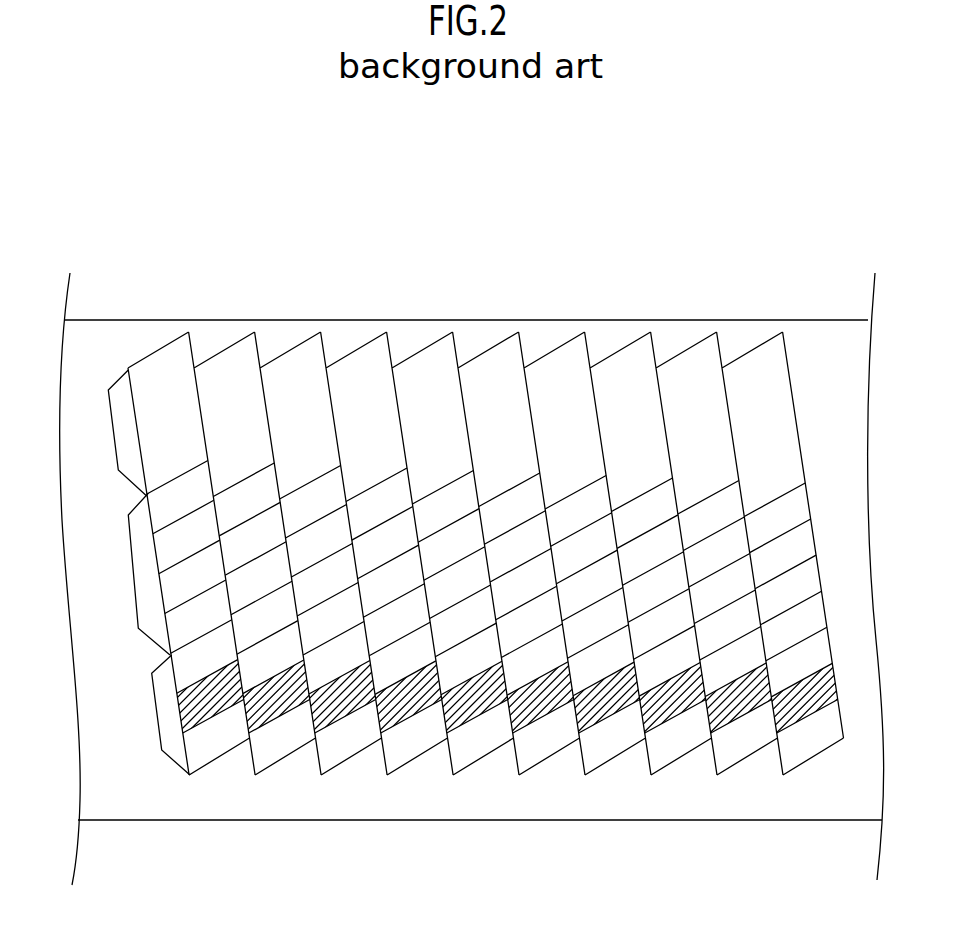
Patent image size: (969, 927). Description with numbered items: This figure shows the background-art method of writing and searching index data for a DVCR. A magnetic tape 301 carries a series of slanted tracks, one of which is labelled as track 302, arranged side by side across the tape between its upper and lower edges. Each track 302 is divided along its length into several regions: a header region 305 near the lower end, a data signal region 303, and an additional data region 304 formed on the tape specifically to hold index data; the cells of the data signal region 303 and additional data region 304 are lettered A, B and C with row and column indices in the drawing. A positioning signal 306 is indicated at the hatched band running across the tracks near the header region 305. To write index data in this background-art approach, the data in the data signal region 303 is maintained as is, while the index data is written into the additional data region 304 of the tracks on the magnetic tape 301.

The magnetic tape 301 is at (115, 348).
The track 302 is at (230, 367).
The data signal region 303 is at (106, 433).
The additional data region 304 is at (127, 574).
The header region 305 is at (149, 715).
The positioning signal 306 is at (214, 703).